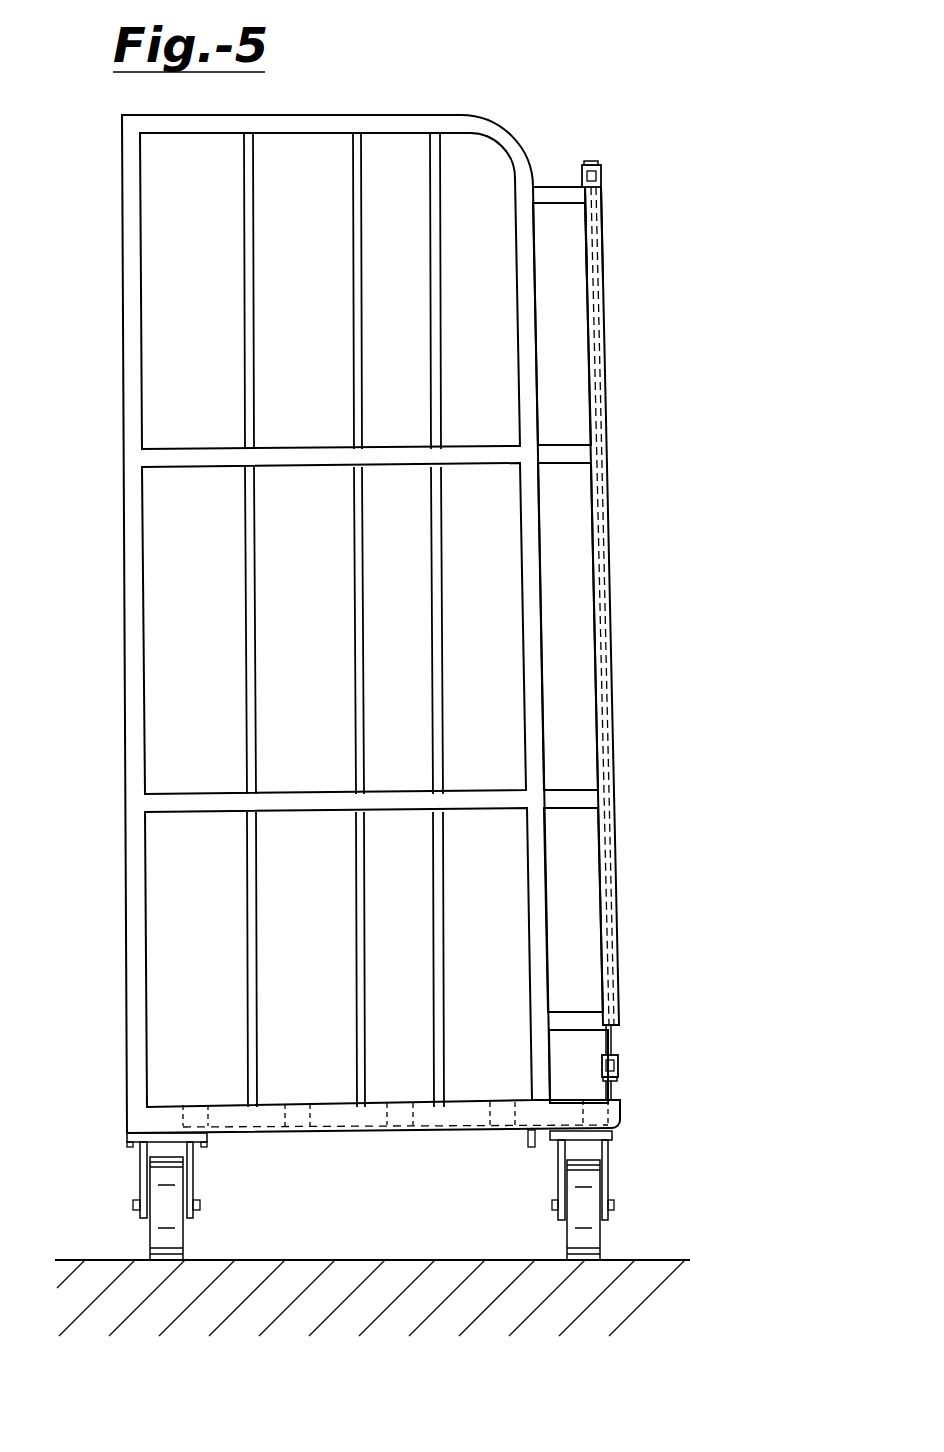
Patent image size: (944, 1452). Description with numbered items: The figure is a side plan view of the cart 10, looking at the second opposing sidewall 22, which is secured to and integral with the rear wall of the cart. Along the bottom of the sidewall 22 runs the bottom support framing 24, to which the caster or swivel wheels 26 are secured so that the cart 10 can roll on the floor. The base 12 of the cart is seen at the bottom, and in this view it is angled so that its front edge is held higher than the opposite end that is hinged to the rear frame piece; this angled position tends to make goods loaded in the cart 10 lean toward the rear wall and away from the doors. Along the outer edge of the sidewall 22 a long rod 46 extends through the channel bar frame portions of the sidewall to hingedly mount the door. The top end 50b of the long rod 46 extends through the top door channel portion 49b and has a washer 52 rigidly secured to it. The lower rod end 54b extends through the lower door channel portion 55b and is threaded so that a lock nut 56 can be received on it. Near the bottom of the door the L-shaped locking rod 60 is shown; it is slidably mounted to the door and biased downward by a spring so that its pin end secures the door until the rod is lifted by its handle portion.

The cart 10 is at (665, 426).
The base 12 is at (461, 1094).
The second opposing sidewall 22 is at (441, 110).
The bottom support framing 24 is at (130, 1136).
The caster wheel 26 is at (150, 1236).
The long rod 46 is at (610, 598).
The top door channel portion 49b is at (582, 174).
The top end of rod 50b is at (604, 198).
The washer 52 is at (593, 160).
The lower rod end 54b is at (614, 1043).
The lower door channel portion 55b is at (620, 1066).
The lock nut 56 is at (619, 1079).
The L-shaped locking rod 60 is at (633, 1096).